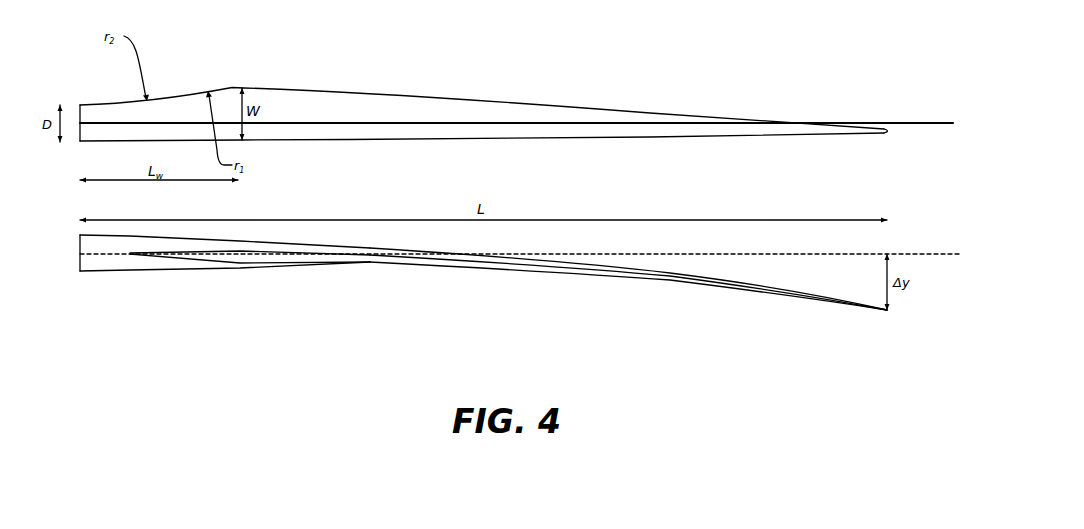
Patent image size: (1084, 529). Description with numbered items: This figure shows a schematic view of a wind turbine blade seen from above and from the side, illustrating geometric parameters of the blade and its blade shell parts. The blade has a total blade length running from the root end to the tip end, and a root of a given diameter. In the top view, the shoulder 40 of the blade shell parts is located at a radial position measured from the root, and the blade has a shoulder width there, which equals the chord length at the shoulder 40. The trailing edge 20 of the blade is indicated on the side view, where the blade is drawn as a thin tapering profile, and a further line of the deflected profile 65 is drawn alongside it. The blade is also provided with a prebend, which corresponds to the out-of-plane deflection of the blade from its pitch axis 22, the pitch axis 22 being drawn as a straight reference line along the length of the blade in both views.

The trailing edge 20 is at (365, 258).
The pitch axis 22 is at (400, 123).
The shoulder 40 is at (243, 86).
The deflected blade profile 65 is at (233, 262).